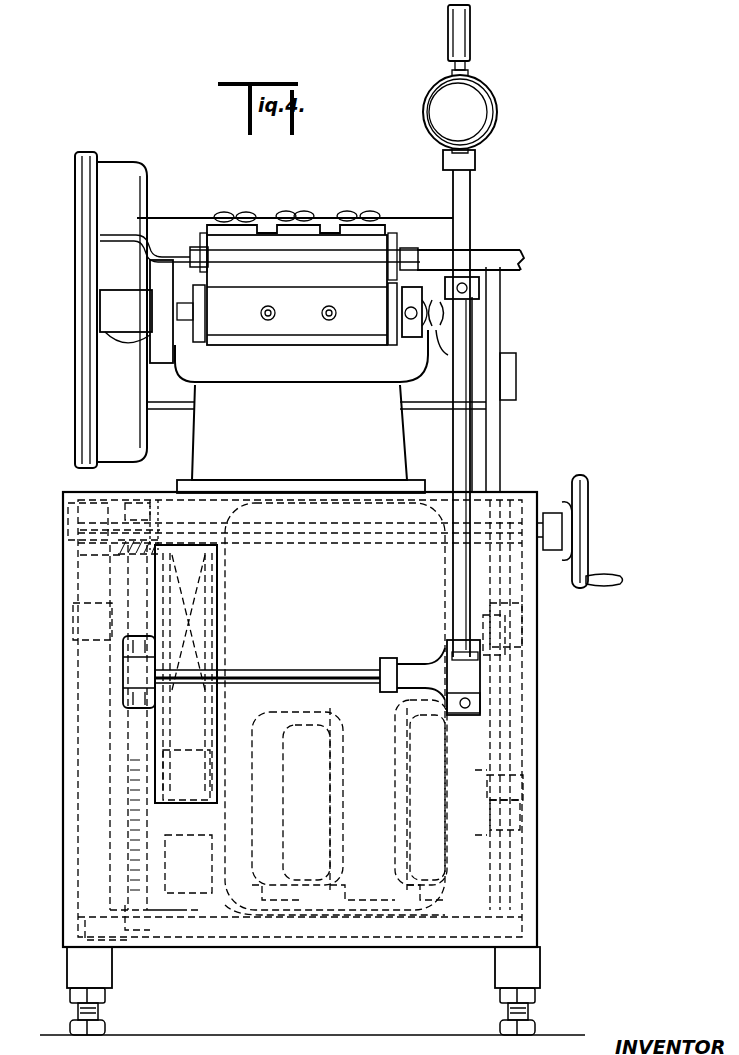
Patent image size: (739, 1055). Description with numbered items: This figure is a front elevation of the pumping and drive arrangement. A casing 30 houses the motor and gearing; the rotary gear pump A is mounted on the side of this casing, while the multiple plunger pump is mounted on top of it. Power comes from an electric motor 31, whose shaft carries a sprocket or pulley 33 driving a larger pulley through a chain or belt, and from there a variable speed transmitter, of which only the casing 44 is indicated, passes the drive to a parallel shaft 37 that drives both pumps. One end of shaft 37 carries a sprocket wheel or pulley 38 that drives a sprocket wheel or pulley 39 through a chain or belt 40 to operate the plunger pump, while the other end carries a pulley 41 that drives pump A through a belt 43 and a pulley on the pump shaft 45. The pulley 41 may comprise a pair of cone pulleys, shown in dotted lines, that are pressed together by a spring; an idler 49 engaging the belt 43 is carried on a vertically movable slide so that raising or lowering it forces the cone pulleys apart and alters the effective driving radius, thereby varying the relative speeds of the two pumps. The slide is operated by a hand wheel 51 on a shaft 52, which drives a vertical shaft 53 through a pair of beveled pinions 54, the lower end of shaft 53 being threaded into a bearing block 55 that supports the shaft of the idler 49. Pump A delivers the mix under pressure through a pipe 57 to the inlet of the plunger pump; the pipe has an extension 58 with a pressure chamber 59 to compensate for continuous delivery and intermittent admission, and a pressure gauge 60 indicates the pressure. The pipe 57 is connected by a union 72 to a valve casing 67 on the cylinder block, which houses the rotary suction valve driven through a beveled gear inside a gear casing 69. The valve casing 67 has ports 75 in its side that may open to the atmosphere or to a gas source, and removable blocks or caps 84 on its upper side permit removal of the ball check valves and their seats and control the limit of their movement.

The casing 30 is at (510, 740).
The electric motor 31 is at (349, 800).
The sprocket or pulley 33 is at (500, 850).
The shaft 37 is at (532, 620).
The sprocket wheel or pulley 38 is at (497, 615).
The sprocket wheel or pulley 39 is at (500, 316).
The chain or belt 40 is at (500, 457).
The pulley 41 is at (205, 590).
The belt 43 is at (218, 728).
The casing 44 is at (268, 900).
The shaft 45 is at (318, 672).
The idler 49 is at (197, 900).
The hand wheel 51 is at (588, 545).
The shaft 52 is at (358, 540).
The vertical shaft 53 is at (130, 595).
The beveled pinions 54 is at (118, 548).
The bearing block 55 is at (133, 843).
The pipe 57 is at (462, 378).
The extension 58 is at (470, 190).
The pressure chamber 59 is at (497, 113).
The pressure gauge 60 is at (470, 40).
The valve casing 67 is at (297, 330).
The gear casing 69 is at (137, 340).
The union 72 is at (410, 340).
The ports 75 is at (325, 309).
The removable blocks or caps 84 is at (283, 195).
The pump A is at (445, 650).